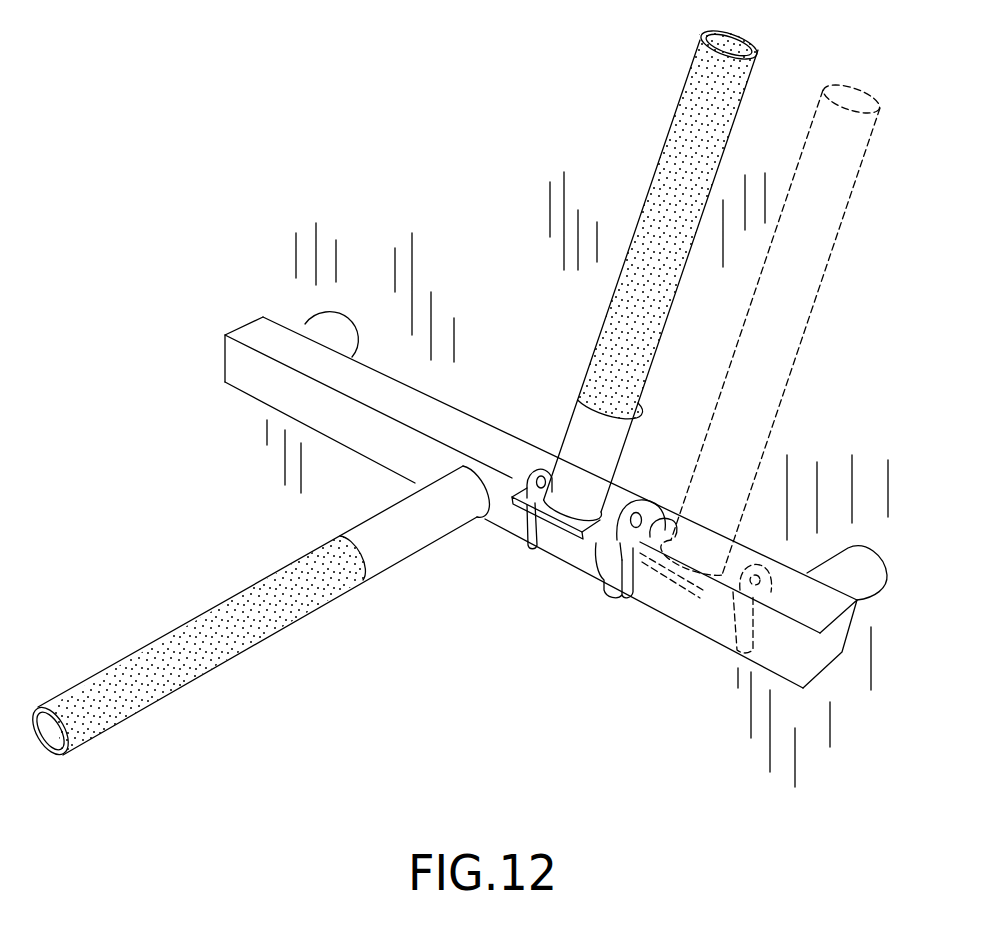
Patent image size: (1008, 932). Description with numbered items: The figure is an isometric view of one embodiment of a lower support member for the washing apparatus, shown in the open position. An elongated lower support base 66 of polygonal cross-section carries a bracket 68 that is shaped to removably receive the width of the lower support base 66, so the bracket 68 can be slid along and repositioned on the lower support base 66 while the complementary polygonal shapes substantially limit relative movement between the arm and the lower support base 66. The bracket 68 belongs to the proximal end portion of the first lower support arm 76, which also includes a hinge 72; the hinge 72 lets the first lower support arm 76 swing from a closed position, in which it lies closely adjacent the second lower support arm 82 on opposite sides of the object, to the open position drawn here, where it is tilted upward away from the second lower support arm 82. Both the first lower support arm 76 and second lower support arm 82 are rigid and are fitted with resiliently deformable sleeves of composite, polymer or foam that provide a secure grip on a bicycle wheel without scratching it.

The lower support base 66 is at (435, 418).
The bracket 68 is at (596, 530).
The hinge 72 is at (612, 547).
The first lower support arm 76 is at (610, 429).
The second lower support arm 82 is at (377, 565).